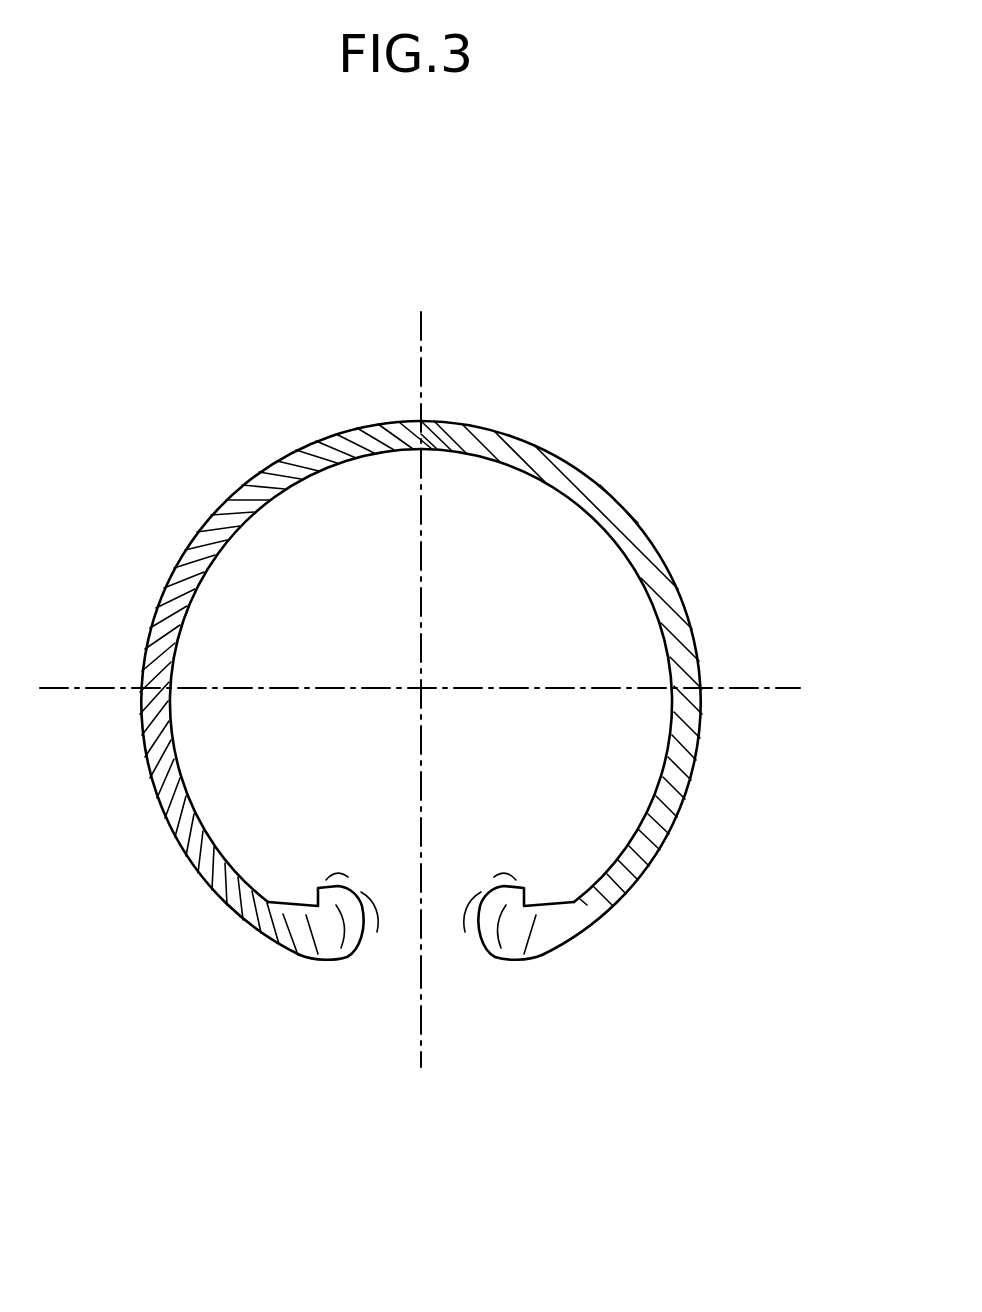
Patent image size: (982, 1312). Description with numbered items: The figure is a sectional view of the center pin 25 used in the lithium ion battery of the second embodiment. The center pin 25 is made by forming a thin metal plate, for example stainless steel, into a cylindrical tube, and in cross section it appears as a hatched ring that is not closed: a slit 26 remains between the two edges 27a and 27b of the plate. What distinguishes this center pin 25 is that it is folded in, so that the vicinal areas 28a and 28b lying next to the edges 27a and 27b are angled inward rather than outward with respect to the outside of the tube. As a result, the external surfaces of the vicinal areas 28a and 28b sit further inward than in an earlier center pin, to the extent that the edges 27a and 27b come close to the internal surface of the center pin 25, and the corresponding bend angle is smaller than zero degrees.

The center pin 25 is at (597, 430).
The slit 26 is at (418, 997).
The edge 27a is at (313, 902).
The edge 27b is at (530, 904).
The vicinal area 28a is at (352, 894).
The vicinal area 28b is at (490, 894).